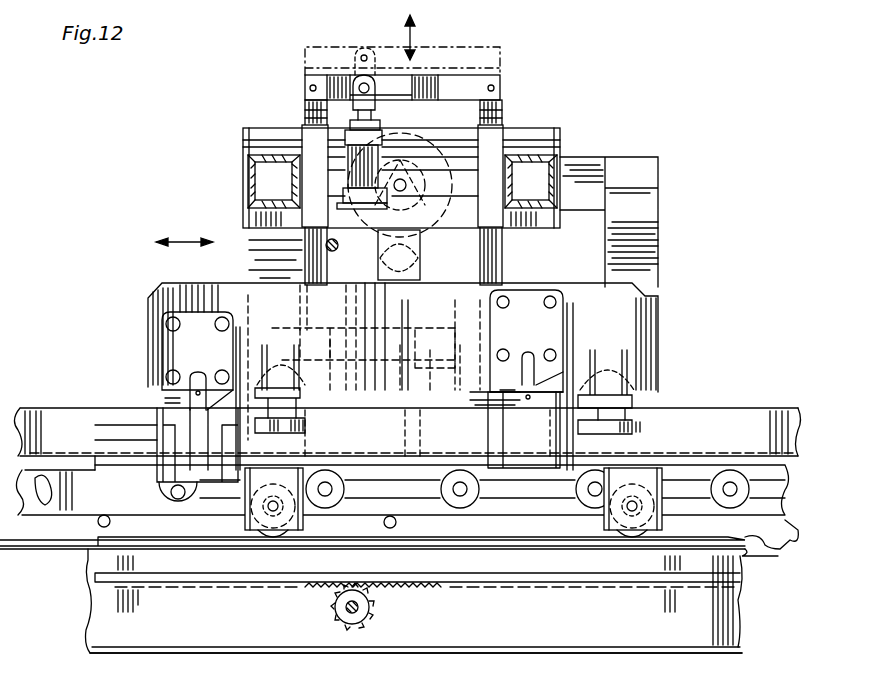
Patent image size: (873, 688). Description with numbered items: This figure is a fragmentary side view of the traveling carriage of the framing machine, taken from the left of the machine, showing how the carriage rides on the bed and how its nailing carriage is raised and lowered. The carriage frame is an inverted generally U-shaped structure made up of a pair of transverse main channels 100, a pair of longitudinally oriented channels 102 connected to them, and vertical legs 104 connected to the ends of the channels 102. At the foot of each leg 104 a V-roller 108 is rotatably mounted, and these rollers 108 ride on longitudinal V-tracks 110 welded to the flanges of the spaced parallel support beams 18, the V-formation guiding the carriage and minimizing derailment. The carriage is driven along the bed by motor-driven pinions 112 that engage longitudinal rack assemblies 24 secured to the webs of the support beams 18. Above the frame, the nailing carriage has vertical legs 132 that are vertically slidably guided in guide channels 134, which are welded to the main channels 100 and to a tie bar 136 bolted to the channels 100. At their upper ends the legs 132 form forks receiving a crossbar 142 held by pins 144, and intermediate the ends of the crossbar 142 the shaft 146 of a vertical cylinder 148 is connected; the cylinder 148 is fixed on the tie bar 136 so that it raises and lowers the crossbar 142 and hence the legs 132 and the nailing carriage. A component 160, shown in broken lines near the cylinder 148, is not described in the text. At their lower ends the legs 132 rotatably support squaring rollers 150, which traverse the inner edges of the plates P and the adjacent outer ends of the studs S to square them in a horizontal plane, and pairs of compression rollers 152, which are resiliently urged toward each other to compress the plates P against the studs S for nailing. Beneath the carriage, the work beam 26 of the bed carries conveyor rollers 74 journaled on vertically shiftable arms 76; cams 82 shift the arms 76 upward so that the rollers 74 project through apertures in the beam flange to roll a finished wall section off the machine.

The crossbar 142 is at (456, 84).
The pin 144 is at (309, 88).
The vertical leg 132 is at (305, 107).
The guide channel 134 is at (302, 130).
The transverse main channel 100 is at (268, 168).
The longitudinally oriented channel 102 is at (598, 158).
The vertical leg 104 is at (645, 199).
The shaft 146 is at (370, 104).
The disc 160 is at (440, 165).
The vertical cylinder 148 is at (346, 260).
The tie bar 136 is at (460, 223).
The squaring roller 150 is at (183, 400).
The compression roller 152 is at (292, 435).
The plate P is at (786, 440).
The stud S is at (23, 406).
The conveyor roller 74 is at (345, 497).
The arm 76 is at (402, 490).
The V-roller 108 is at (276, 540).
The work beam 26 is at (778, 531).
The V-track 110 is at (742, 554).
The support beam 18 is at (178, 633).
The cam 82 is at (98, 527).
The rack assembly 24 is at (405, 590).
The pinion 112 is at (362, 614).